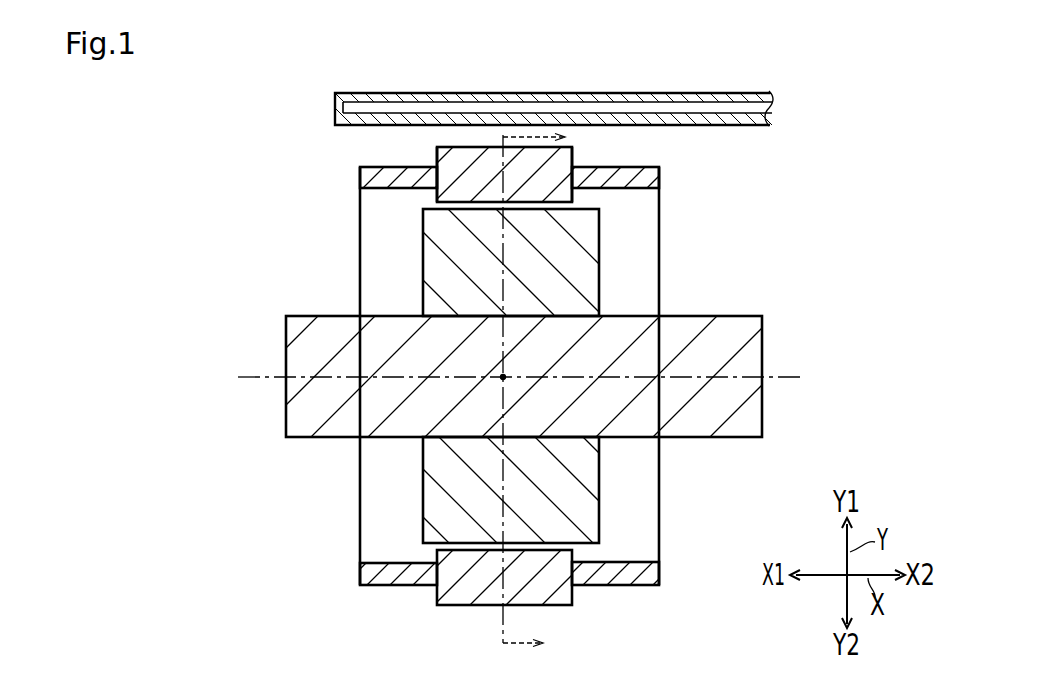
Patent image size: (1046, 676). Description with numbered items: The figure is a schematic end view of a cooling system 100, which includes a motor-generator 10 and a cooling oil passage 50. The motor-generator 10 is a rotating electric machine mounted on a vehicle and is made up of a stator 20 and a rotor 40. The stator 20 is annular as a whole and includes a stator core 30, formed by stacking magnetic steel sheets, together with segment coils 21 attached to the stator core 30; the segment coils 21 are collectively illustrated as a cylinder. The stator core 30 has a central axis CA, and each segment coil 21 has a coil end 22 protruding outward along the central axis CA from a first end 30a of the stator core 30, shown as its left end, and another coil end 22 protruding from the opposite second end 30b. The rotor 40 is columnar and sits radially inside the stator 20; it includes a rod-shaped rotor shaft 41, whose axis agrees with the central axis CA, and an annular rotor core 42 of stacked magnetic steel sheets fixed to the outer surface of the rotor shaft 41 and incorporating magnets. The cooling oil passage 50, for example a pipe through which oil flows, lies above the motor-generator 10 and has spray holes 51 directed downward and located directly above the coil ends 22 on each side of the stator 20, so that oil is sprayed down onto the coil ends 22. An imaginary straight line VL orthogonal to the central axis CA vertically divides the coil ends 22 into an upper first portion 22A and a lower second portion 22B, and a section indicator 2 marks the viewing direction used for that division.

The cooling system 100 is at (303, 83).
The motor-generator 10 is at (290, 163).
The stator 20 is at (350, 583).
The segment coil 21 is at (378, 588).
The coil end 22 is at (612, 587).
The first portion 22A is at (360, 172).
The second portion 22B is at (360, 568).
The stator core 30 is at (437, 149).
The first end 30a is at (436, 196).
The second end 30b is at (573, 194).
The rotor 40 is at (305, 218).
The rotor shaft 41 is at (286, 320).
The rotor core 42 is at (422, 257).
The cooling oil passage 50 is at (580, 93).
The spray hole 51 is at (383, 116).
The central axis CA is at (502, 375).
The imaginary straight line VL is at (506, 374).
The section line of FIG. 2 is at (546, 392).